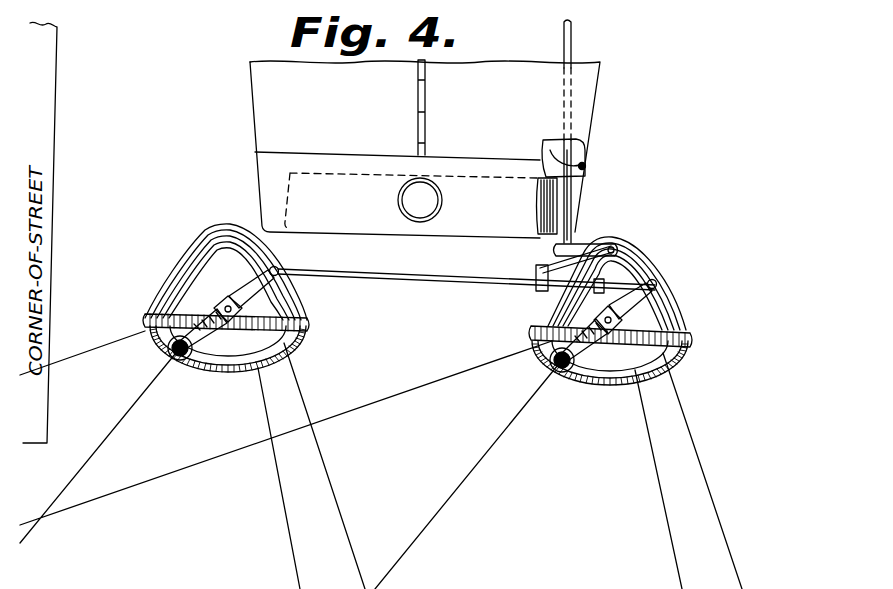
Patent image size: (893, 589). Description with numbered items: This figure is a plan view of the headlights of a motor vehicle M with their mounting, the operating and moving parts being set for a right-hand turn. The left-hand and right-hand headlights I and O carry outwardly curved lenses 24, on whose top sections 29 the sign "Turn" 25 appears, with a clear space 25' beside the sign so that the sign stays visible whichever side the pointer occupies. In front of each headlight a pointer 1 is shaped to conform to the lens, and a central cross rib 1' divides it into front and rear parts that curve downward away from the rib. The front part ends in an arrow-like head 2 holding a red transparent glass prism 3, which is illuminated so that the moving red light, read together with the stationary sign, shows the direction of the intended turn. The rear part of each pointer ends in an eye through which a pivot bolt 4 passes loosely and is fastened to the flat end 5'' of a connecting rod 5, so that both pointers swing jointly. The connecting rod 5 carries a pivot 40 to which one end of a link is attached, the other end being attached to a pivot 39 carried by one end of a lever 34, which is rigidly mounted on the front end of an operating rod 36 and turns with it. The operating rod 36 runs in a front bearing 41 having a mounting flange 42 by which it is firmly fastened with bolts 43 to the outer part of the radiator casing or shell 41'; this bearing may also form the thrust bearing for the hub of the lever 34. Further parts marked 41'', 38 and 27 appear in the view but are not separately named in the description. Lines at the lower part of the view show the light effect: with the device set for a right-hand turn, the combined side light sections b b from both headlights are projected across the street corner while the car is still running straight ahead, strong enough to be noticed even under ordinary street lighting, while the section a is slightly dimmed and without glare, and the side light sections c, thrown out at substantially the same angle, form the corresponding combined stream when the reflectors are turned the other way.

The motor vehicle M is at (262, 100).
The operating rod 36 is at (572, 48).
The mounting flange 42 is at (583, 160).
The bolts 43 is at (585, 161).
The front bearing 41 is at (580, 202).
The radiator casing or shell 41' is at (432, 192).
The body bottom 41'' is at (457, 246).
The lever 34 is at (592, 244).
The pivot 39 is at (620, 252).
The clamp 38 is at (541, 266).
The pivot 40 is at (534, 288).
The connecting rod 5 is at (466, 293).
The flat end of connecting rod 5'' is at (498, 267).
The pivot bolt 4 is at (278, 268).
The top sections of the lenses 29 is at (309, 320).
The sign "Turn" 25 is at (419, 371).
The clear space 25' is at (516, 357).
The rim hatching 27 is at (272, 371).
The outwardly curved lenses 24 is at (216, 373).
The arrow-like head 2 is at (168, 352).
The transparent glass prism 3 is at (182, 360).
The pointers 1 is at (442, 308).
The central cross rib 1' is at (393, 303).
The right-hand headlight O is at (309, 299).
The left-hand headlight I is at (691, 315).
The light section a is at (280, 531).
The side light section b is at (60, 363).
The side light section c is at (324, 483).